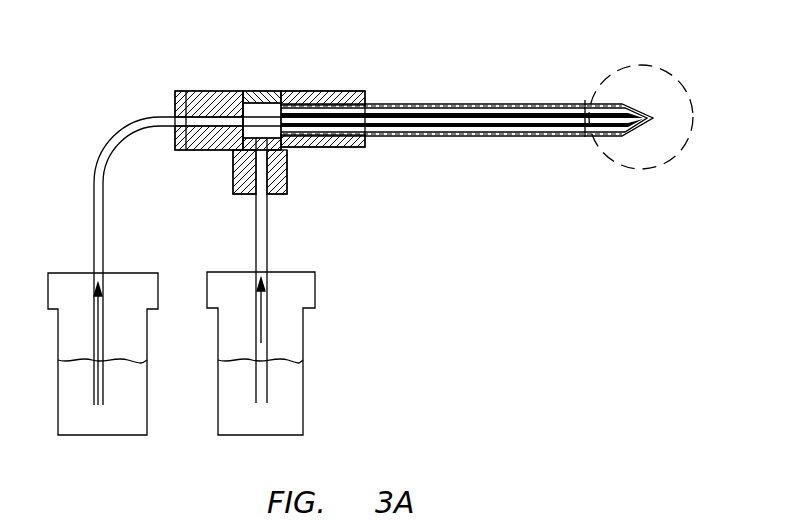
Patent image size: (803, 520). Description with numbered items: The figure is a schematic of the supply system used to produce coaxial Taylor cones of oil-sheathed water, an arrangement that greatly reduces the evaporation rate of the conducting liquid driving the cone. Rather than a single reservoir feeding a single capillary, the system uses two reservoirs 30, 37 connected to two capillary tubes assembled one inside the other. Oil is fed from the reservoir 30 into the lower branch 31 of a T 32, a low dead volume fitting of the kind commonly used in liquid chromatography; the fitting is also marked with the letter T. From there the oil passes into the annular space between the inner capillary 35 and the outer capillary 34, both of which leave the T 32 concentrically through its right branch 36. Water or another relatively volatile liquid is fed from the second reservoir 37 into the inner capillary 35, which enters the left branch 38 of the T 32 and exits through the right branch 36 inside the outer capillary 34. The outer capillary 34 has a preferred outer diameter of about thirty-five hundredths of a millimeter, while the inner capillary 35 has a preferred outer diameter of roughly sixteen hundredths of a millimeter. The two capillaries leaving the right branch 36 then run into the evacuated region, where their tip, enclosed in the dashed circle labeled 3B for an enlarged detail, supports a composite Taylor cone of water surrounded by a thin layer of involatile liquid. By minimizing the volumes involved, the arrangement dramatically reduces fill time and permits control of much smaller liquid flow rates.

The reservoir 30 is at (303, 420).
The lower branch 31 is at (283, 195).
The T 32 is at (263, 90).
The outer capillary 34 is at (432, 137).
The inner capillary 35 is at (440, 104).
The right branch 36 is at (338, 91).
The second reservoir 37 is at (147, 430).
The left branch 38 is at (178, 88).
The element T is at (216, 91).
The detail view circle 3B is at (640, 170).